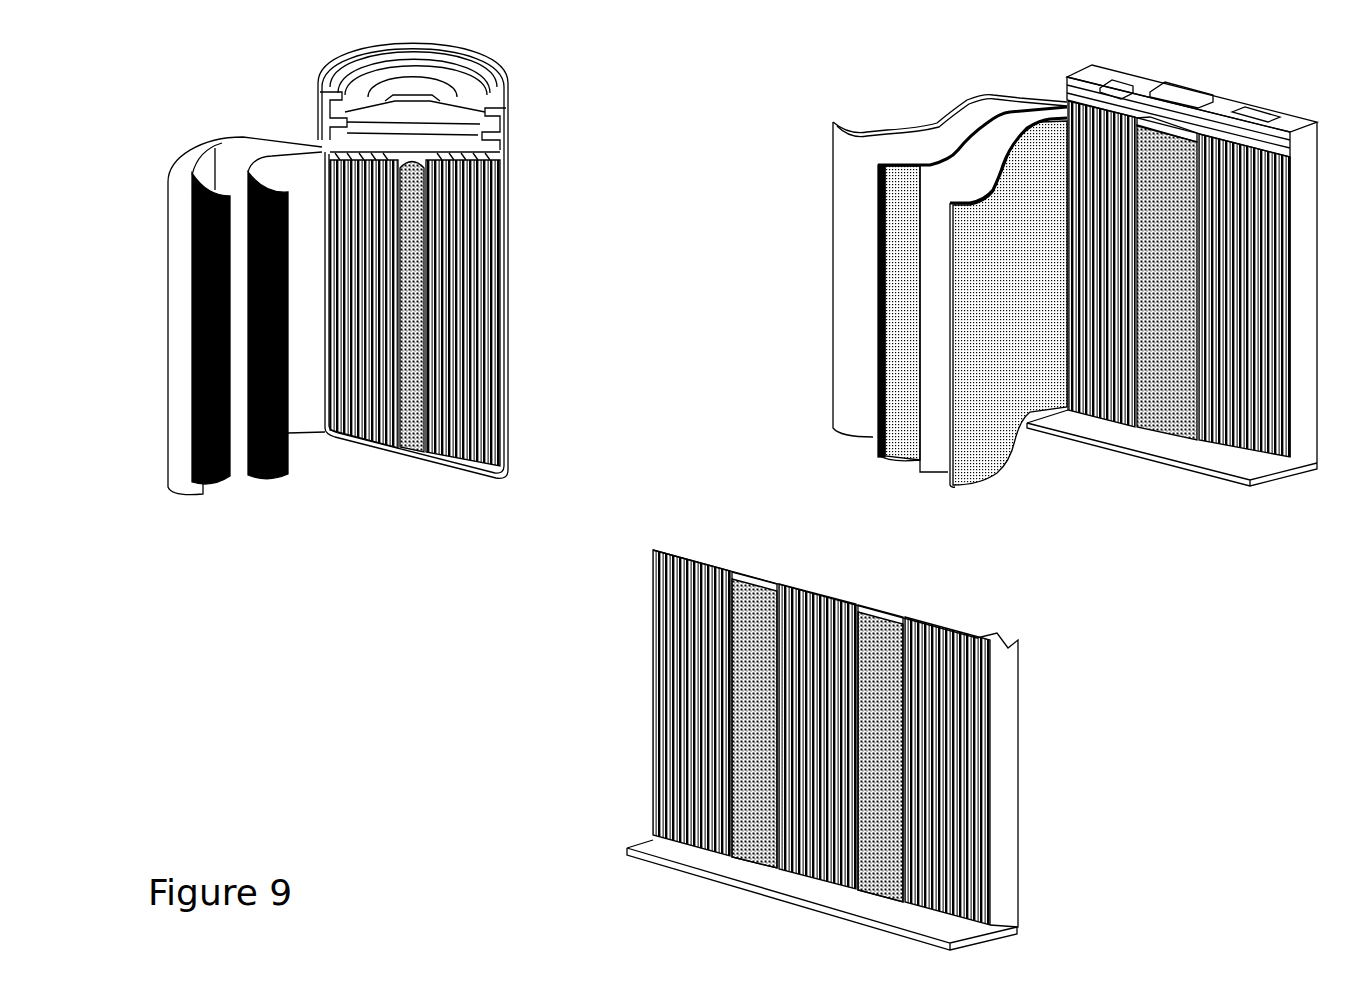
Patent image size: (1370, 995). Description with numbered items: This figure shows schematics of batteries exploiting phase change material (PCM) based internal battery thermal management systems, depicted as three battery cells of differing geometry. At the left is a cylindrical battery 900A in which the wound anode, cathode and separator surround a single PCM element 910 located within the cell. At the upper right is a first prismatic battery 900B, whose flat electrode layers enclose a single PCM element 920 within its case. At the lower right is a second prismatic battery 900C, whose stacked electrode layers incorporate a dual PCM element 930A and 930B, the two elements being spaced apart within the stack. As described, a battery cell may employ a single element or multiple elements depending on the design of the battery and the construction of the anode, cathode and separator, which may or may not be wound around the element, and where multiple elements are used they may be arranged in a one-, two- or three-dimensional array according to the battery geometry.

The cylindrical battery 900A is at (233, 527).
The first prismatic battery 900B is at (771, 165).
The second prismatic battery 900C is at (1052, 794).
The single PCM element 910 is at (412, 442).
The single PCM element 920 is at (1173, 433).
The dual PCM element 930A is at (748, 865).
The dual PCM element 930B is at (877, 897).